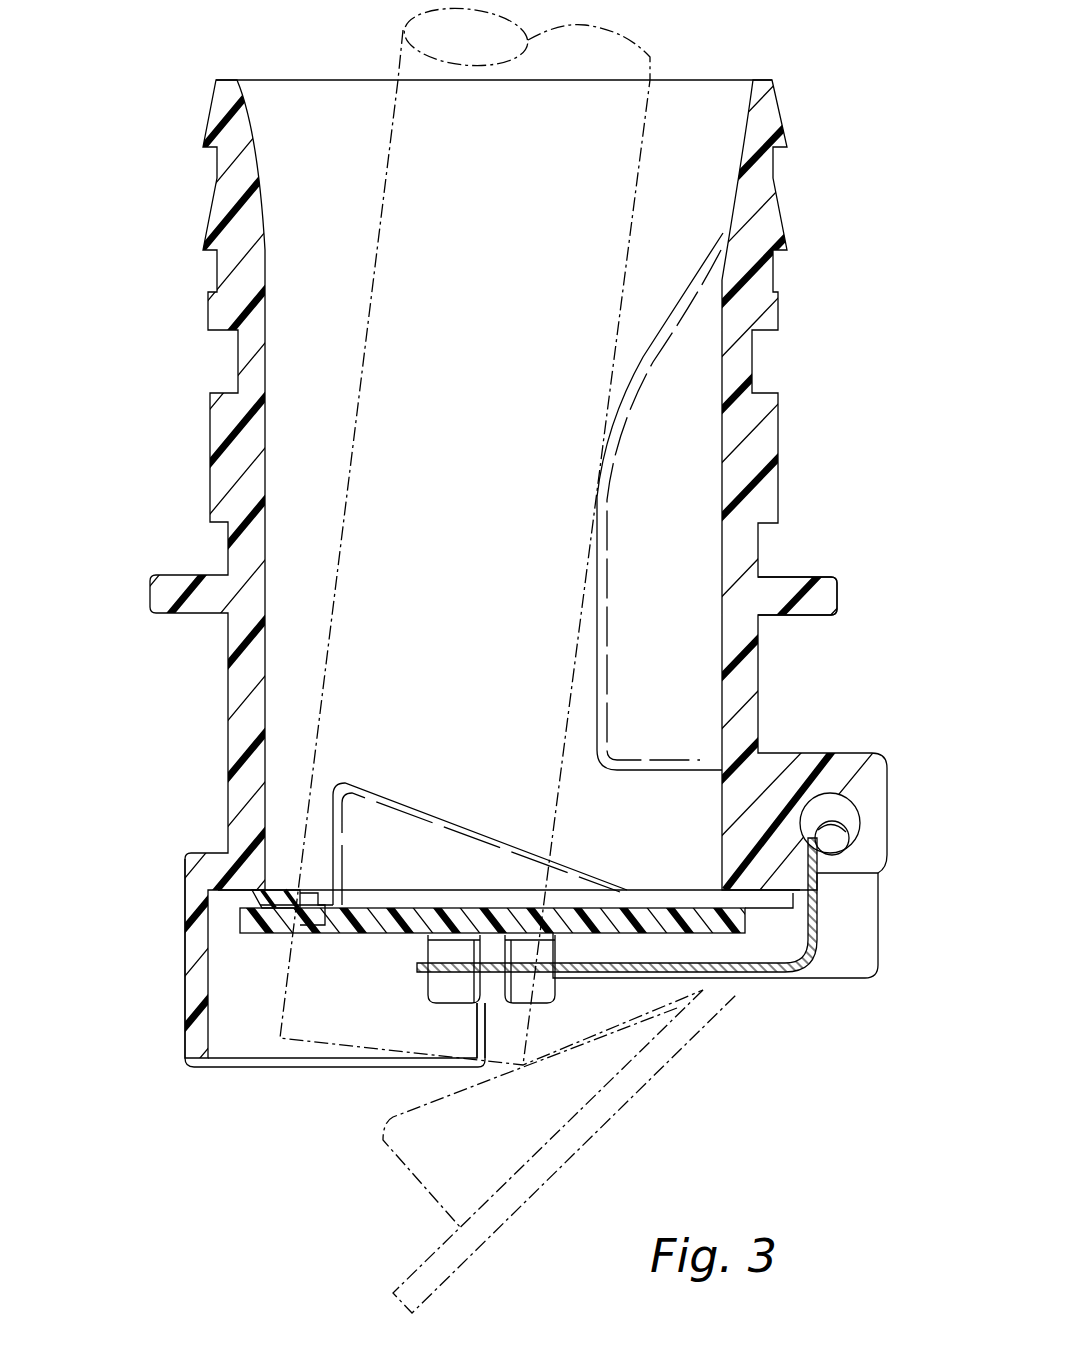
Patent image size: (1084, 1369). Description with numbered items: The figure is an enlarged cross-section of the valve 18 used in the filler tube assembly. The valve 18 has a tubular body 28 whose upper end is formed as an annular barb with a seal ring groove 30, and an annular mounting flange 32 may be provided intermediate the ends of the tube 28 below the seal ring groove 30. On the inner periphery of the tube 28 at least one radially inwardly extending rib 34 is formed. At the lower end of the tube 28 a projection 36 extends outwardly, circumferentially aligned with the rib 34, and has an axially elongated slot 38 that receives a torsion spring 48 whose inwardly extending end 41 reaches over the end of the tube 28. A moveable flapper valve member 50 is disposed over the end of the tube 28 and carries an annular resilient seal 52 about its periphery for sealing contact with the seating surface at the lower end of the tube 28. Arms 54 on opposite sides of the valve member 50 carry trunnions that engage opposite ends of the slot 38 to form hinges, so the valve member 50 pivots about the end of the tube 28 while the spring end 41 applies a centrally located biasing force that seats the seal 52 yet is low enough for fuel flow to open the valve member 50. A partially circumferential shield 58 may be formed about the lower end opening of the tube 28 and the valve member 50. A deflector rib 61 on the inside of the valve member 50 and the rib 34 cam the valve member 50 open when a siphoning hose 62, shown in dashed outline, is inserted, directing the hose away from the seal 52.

The valve 18 is at (170, 472).
The tubular body 28 is at (212, 210).
The seal ring groove 30 is at (753, 367).
The annular mounting flange 32 is at (790, 577).
The rib 34 is at (643, 357).
The projection 36 is at (833, 757).
The slot 38 is at (845, 812).
The inwardly extending end of the torsion spring 41 is at (628, 980).
The torsion spring 48 is at (852, 865).
The valve member 50 is at (355, 950).
The seal 52 is at (275, 893).
The arms 54 is at (822, 982).
The shield 58 is at (185, 1045).
The deflector rib 61 is at (417, 803).
The siphoning hose 62 is at (397, 63).